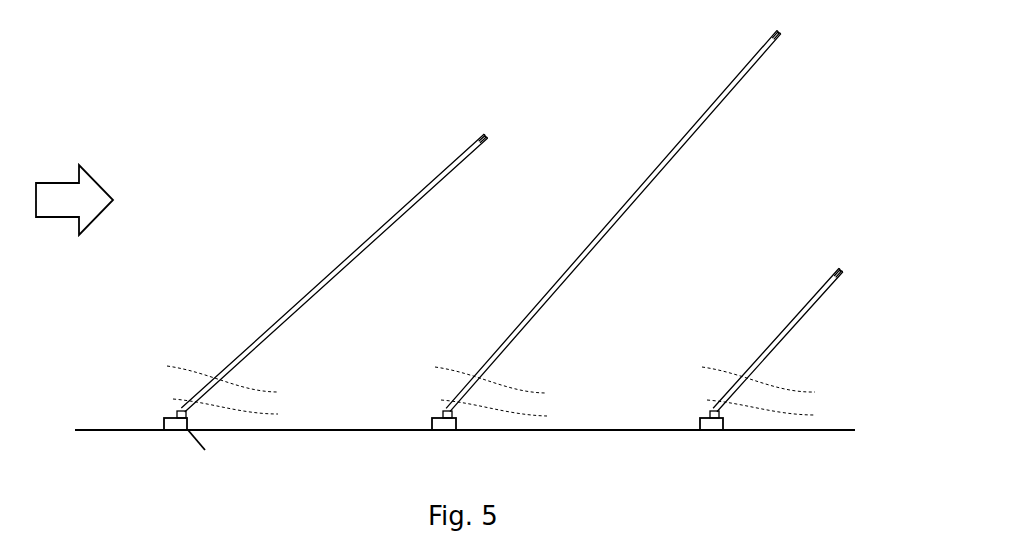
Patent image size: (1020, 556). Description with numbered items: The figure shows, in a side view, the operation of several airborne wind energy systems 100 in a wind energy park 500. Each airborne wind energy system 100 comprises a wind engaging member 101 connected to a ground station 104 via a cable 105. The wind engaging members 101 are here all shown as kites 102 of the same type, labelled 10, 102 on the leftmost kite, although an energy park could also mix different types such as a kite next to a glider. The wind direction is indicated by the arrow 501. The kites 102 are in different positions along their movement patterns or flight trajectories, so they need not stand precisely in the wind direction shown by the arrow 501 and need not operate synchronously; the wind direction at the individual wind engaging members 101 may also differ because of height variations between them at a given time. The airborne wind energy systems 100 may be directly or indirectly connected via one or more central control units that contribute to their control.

The wind energy park 500 is at (231, 116).
The arrow indicating wind direction 501 is at (57, 195).
The airborne wind energy system 100 is at (205, 292).
The cable 105 is at (362, 237).
The wind engaging member 101 is at (795, 42).
The flap 10 is at (463, 127).
The kite 102 is at (483, 138).
The ground station 104 is at (180, 411).